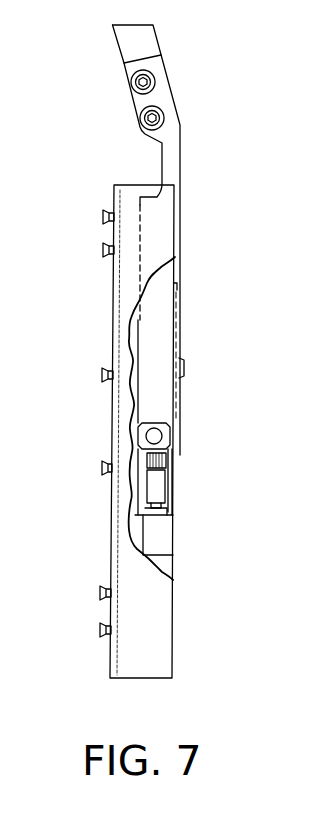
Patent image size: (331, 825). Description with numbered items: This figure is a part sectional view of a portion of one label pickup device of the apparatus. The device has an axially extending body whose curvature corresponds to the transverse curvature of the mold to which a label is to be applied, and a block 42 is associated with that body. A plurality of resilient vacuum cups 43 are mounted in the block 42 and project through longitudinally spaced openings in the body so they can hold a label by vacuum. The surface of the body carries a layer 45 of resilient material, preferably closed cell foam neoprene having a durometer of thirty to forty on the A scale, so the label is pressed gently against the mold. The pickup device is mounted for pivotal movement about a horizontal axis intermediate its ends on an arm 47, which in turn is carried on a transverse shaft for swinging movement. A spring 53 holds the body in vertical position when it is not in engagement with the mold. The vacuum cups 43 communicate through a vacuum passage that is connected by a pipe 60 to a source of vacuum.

The block 42 is at (165, 537).
The resilient vacuum cups 43 is at (100, 633).
The layer of resilient material 45 is at (114, 292).
The arm 47 is at (160, 287).
The spring 53 is at (175, 468).
The pipe 60 is at (165, 488).